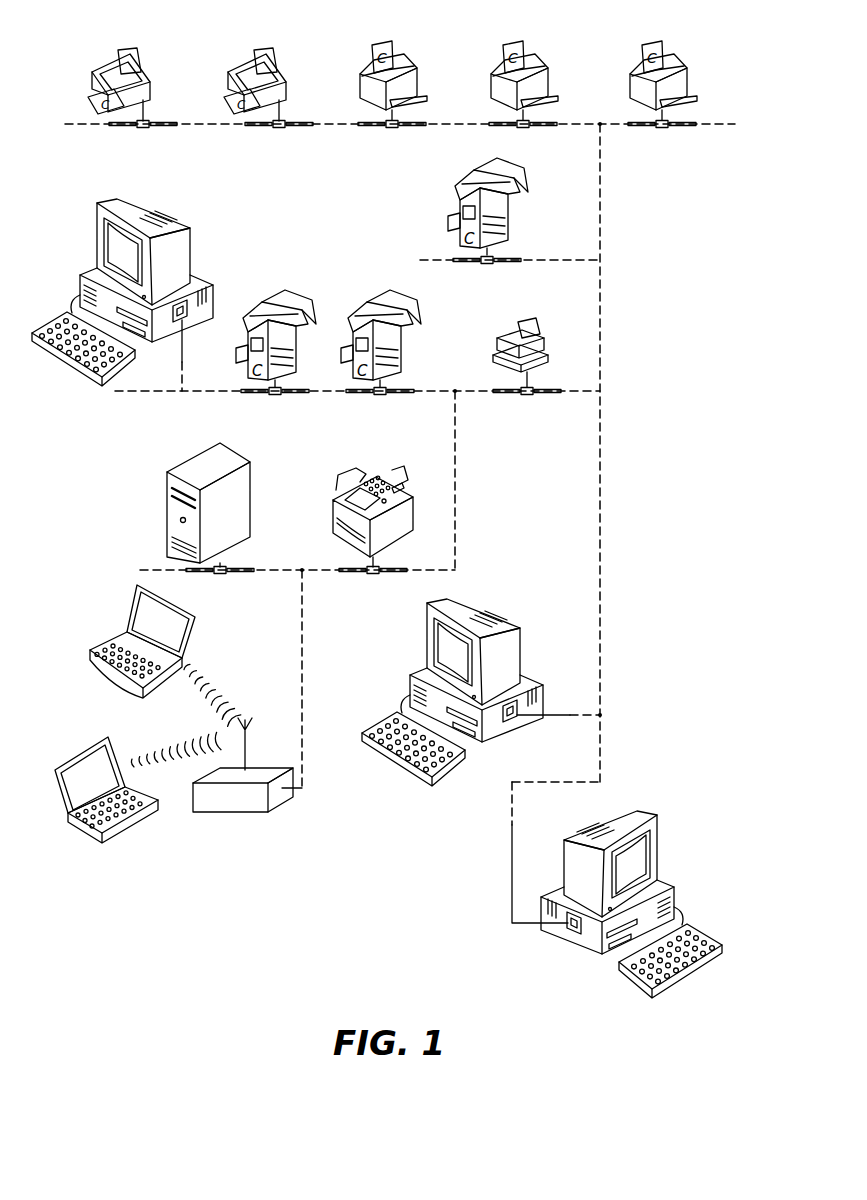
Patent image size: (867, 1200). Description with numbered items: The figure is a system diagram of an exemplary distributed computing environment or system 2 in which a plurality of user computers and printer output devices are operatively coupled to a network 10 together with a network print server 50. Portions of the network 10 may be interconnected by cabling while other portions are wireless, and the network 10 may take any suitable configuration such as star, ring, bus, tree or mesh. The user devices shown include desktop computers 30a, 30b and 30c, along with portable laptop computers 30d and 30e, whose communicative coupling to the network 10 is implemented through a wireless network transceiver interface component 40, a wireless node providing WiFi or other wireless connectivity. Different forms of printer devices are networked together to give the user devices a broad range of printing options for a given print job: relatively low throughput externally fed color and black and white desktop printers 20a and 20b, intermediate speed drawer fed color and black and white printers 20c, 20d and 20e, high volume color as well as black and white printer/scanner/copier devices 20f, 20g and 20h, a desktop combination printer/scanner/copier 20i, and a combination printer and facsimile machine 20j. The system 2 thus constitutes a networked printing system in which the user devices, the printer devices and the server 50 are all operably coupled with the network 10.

The distributed computing environment or system 2 is at (86, 29).
The network 10 is at (600, 165).
The externally fed color desktop printer 20a is at (146, 80).
The externally fed black and white desktop printer 20b is at (229, 90).
The drawer fed color and black and white printer 20c is at (360, 99).
The drawer fed color and black and white printer 20d is at (491, 81).
The drawer fed color and black and white printer 20e is at (628, 81).
The high volume printer/scanner/copier device 20f is at (460, 240).
The high volume printer/scanner/copier device 20g is at (246, 370).
The high volume printer/scanner/copier device 20h is at (363, 307).
The desktop combination printer/scanner/copier 20i is at (488, 362).
The combination printer and facsimile machine 20j is at (332, 512).
The desktop computer 30a is at (185, 240).
The desktop computer 30b is at (522, 653).
The desktop computer 30c is at (677, 895).
The laptop computer 30d is at (128, 620).
The laptop computer 30e is at (123, 827).
The wireless network transceiver interface component 40 is at (235, 815).
The print server 50 is at (166, 510).